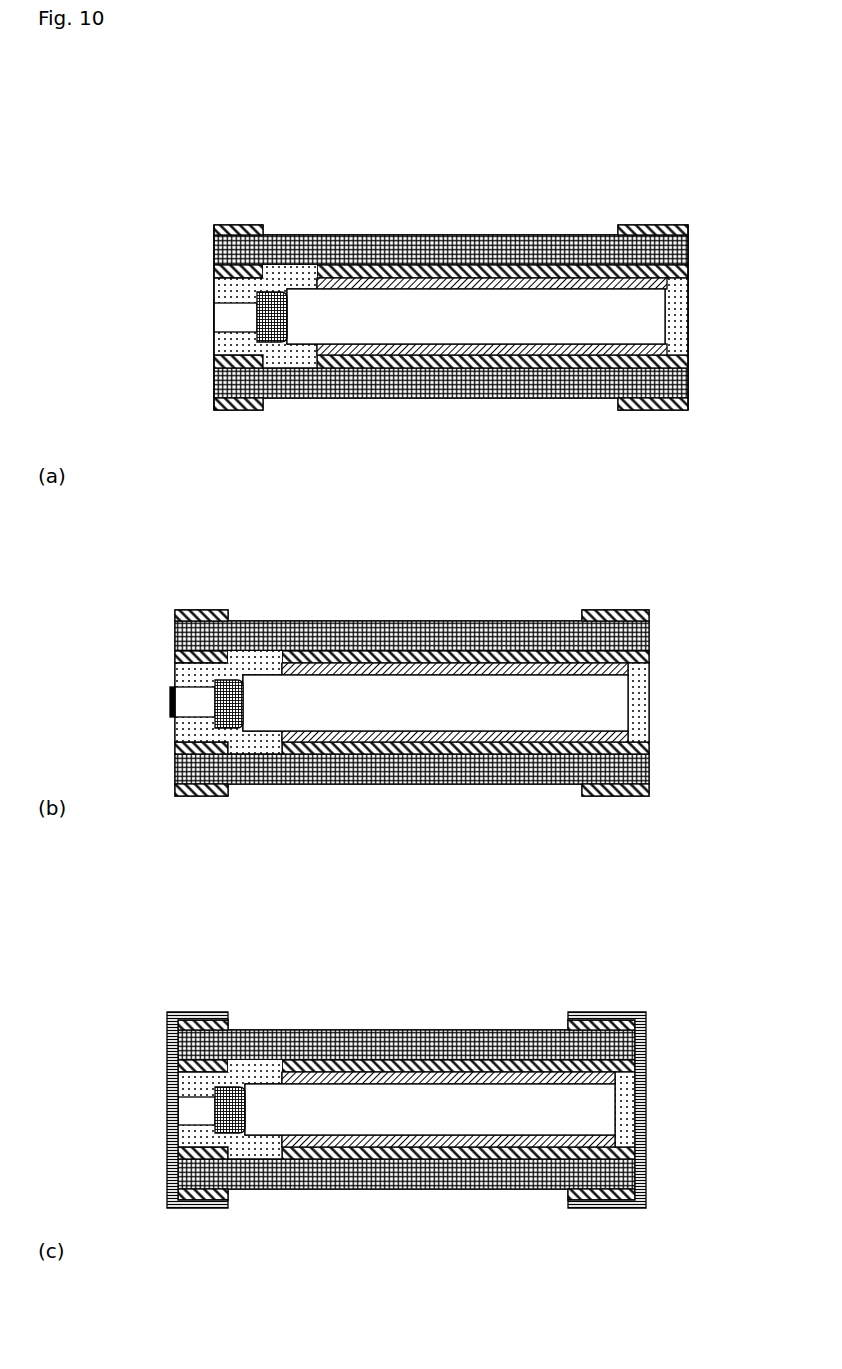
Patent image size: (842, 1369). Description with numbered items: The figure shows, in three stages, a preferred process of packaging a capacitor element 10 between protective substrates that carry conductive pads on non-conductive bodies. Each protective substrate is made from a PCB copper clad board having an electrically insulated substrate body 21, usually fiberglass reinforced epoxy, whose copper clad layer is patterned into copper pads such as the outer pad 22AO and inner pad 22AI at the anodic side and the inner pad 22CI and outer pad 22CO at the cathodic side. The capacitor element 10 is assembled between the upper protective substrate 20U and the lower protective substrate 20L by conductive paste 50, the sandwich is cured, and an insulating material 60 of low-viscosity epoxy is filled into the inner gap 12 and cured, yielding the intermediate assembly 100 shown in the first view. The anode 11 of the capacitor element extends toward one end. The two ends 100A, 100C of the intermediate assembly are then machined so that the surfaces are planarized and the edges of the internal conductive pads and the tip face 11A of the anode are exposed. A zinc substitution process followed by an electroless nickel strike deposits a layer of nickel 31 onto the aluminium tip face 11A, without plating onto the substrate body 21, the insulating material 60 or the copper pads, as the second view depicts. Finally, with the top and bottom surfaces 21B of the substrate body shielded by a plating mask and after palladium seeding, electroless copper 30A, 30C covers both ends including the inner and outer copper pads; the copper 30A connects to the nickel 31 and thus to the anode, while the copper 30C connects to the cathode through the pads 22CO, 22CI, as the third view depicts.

The intermediate assembly 100 is at (251, 108).
The anodic end of the intermediate assembly 100A is at (185, 268).
The cathodic end of the intermediate assembly 100C is at (713, 305).
The capacitor element 10 is at (508, 318).
The anode of the capacitor element 11 is at (240, 315).
The tip face of the anode 11A is at (215, 320).
The internal space 12 is at (492, 308).
The upper protective substrate 20U is at (465, 172).
The lower protective substrate 20L is at (430, 430).
The substrate body 21 is at (470, 247).
The top and bottom surfaces of the substrate body 21B is at (402, 1030).
The outer copper pad at the anodic end 22AO is at (266, 226).
The inner copper pad at the anodic end 22AI is at (270, 273).
The inner copper pad at the cathodic end 22CI is at (563, 265).
The outer copper pad at the cathodic end 22CO is at (657, 226).
The electroless copper on the anodic end 30A is at (165, 1040).
The electroless copper on the cathodic end 30C is at (647, 1077).
The nickel layer 31 is at (167, 705).
The conductive paste 50 is at (533, 357).
The insulating material 60 is at (297, 367).